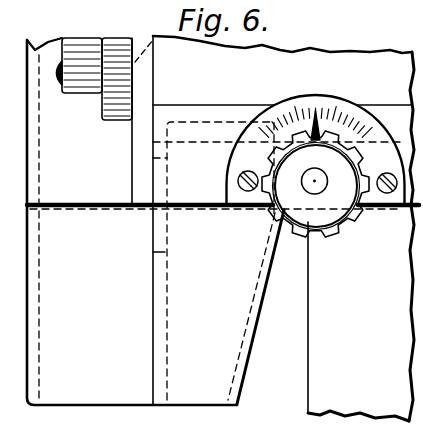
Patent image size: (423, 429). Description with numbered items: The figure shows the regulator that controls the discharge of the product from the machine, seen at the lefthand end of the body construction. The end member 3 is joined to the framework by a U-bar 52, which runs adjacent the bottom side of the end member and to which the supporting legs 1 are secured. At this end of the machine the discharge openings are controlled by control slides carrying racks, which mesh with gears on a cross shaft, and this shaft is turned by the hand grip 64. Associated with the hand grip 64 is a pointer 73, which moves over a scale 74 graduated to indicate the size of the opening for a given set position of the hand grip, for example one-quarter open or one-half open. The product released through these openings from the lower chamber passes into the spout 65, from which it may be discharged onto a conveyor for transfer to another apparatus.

The supporting legs 1 is at (283, 228).
The end member 3 is at (140, 178).
The U-bars 52 is at (279, 261).
The hand grip 64 is at (322, 202).
The spout 65 is at (213, 221).
The pointer 73 is at (319, 124).
The scale 74 is at (284, 122).